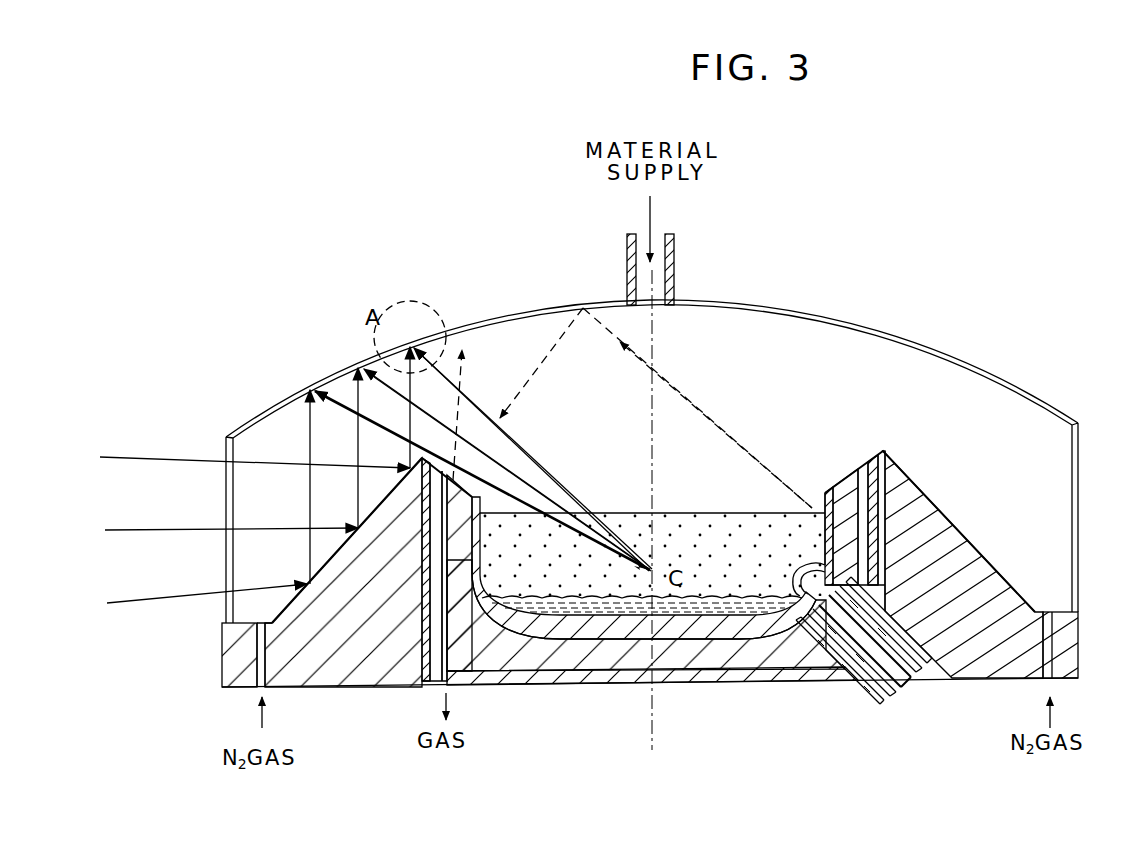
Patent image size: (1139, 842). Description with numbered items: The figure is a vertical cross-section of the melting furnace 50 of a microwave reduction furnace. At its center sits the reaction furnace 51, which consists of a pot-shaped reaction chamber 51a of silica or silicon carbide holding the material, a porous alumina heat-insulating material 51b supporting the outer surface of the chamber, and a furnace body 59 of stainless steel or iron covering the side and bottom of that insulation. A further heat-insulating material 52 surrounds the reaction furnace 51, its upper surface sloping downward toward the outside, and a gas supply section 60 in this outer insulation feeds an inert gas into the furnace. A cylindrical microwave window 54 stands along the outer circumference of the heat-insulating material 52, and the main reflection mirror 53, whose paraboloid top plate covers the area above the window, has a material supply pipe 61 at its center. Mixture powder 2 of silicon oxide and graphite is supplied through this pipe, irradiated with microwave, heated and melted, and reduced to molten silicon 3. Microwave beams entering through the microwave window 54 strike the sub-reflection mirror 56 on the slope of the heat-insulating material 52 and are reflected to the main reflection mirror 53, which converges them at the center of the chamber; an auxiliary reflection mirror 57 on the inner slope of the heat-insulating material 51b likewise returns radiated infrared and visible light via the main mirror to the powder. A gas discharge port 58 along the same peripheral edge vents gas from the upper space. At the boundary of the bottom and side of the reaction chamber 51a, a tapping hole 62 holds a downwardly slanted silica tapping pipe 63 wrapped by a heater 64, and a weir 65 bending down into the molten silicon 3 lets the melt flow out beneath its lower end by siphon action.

The melting furnace 50 is at (487, 276).
The main reflection mirror 53 is at (716, 298).
The microwave window 54 is at (226, 502).
The material supply pipe 61 is at (628, 290).
The gas supply section 60 is at (262, 658).
The heat-insulating material 52 is at (355, 643).
The sub-reflection mirror 56 is at (328, 555).
The furnace body 59 is at (420, 660).
The gas discharge port 58 is at (455, 630).
The auxiliary reflection mirror 57 is at (510, 620).
The weir 65 is at (828, 494).
The reaction furnace 51 is at (568, 652).
The reaction chamber 51a is at (590, 633).
The heat-insulating material 51b is at (625, 660).
The molten silicon 3 is at (673, 622).
The mixture powder 2 is at (728, 606).
The tapping hole 62 is at (918, 693).
The tapping pipe 63 is at (903, 683).
The heater 64 is at (843, 663).